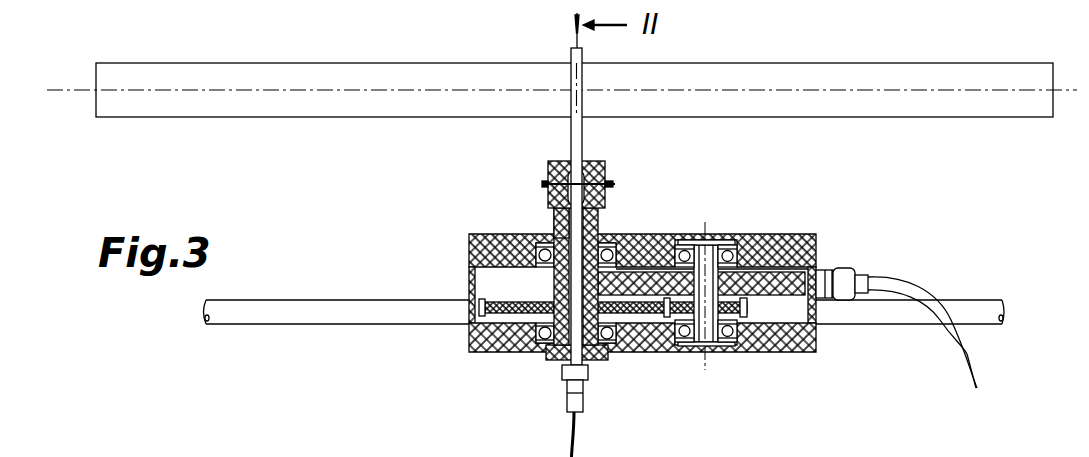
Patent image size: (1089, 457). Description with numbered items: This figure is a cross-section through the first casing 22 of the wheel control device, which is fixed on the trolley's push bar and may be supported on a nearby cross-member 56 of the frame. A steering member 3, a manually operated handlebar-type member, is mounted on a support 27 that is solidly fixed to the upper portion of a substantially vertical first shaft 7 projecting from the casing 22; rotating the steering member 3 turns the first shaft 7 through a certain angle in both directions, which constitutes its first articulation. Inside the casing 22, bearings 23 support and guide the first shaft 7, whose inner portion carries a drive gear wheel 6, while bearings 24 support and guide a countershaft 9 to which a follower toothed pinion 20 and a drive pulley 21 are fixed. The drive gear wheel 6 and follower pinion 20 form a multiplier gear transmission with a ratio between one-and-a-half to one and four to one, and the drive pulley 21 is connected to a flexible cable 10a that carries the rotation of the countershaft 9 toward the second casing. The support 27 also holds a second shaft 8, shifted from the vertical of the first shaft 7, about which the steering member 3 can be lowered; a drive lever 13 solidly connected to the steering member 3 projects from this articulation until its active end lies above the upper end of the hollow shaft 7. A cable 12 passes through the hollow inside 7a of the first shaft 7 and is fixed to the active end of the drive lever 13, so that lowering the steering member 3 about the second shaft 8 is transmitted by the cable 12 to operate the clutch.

The steering member 3 is at (257, 107).
The cross-member 56 is at (345, 300).
The support 27 is at (557, 163).
The second shaft 8 is at (608, 182).
The hollow inside 7a is at (550, 207).
The first shaft 7 is at (553, 228).
The drive lever 13 is at (616, 185).
The bearings 24 is at (732, 244).
The countershaft 9 is at (737, 258).
The drive pulley 21 is at (792, 276).
The flexible cable 10a is at (924, 298).
The drive gear wheel 6 is at (493, 316).
The bearings 23 is at (545, 350).
The first casing 22 is at (667, 330).
The follower toothed pinion 20 is at (742, 322).
The cable 12 is at (572, 428).